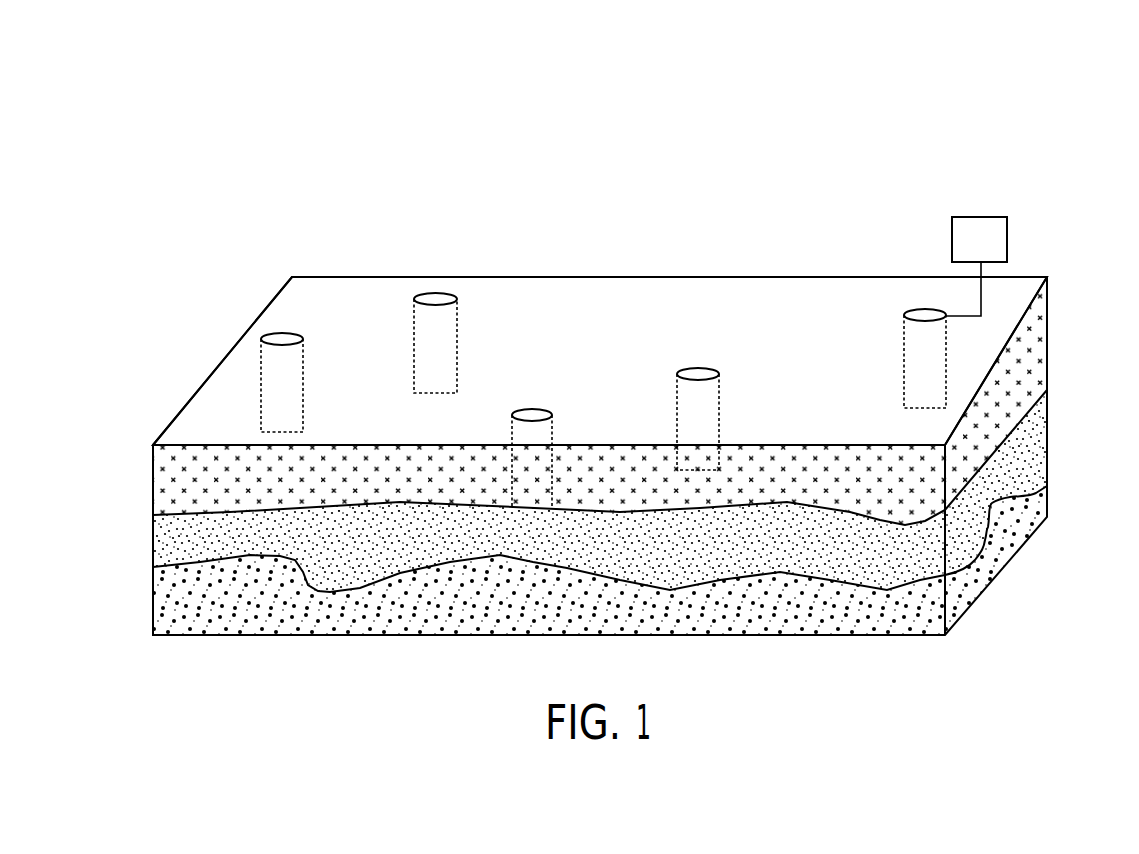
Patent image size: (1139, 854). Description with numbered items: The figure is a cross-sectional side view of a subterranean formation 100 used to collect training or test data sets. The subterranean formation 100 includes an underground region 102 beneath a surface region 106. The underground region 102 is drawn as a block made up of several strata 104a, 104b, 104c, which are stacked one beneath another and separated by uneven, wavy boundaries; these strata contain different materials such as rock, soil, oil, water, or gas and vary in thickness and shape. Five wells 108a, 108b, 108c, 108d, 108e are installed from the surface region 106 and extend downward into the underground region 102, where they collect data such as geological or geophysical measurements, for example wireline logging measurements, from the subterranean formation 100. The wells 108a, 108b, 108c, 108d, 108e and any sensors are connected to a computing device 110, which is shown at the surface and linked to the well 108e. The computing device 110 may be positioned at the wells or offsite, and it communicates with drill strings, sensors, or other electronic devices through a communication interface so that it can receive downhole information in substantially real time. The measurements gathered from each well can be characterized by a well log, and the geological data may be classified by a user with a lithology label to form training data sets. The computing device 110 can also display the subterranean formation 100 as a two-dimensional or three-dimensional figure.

The subterranean formation 100 is at (266, 138).
The underground region 102 is at (152, 545).
The stratum 104a is at (1028, 352).
The stratum 104b is at (1030, 443).
The stratum 104c is at (1030, 505).
The surface region 106 is at (653, 304).
The well 108a is at (290, 334).
The well 108b is at (452, 295).
The well 108c is at (550, 412).
The well 108d is at (703, 369).
The well 108e is at (907, 315).
The computing device 110 is at (976, 266).